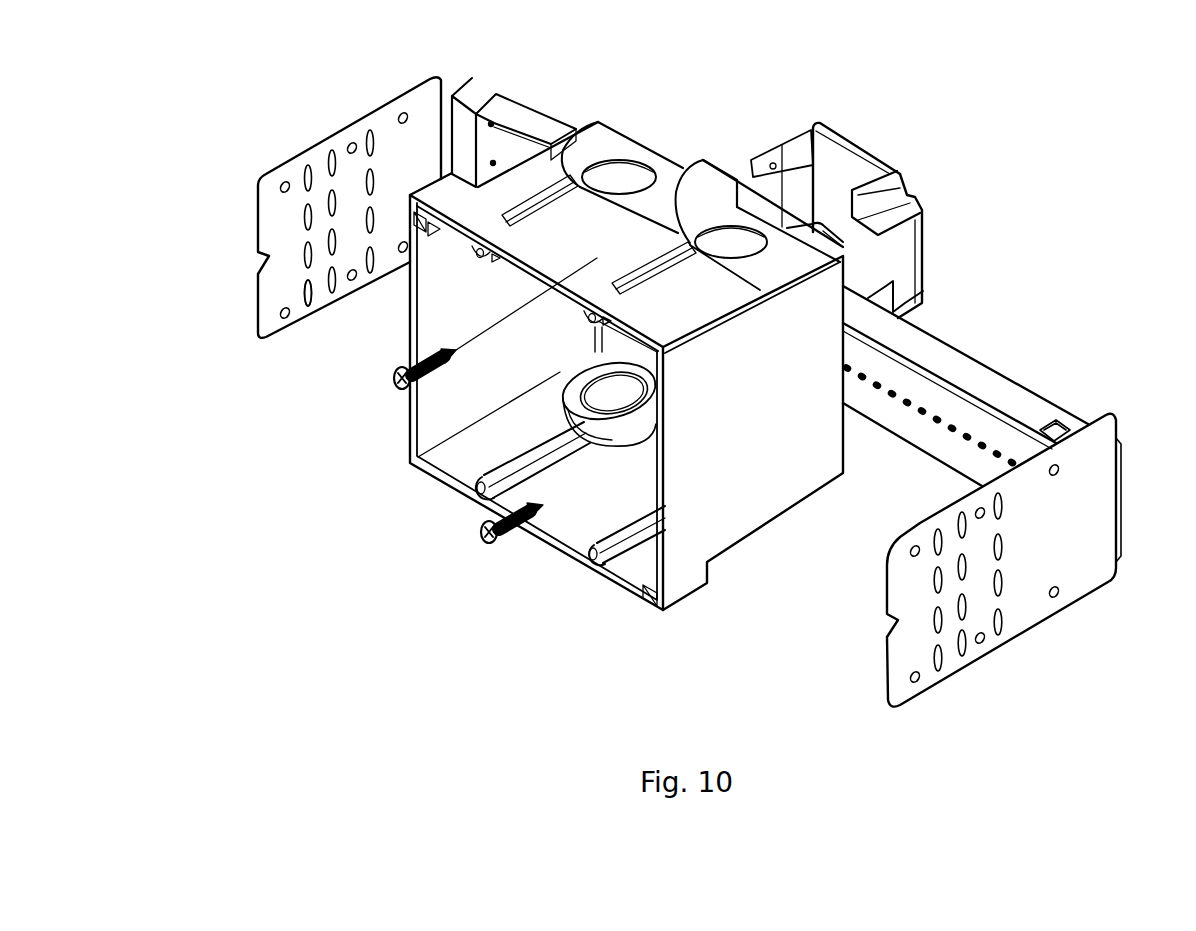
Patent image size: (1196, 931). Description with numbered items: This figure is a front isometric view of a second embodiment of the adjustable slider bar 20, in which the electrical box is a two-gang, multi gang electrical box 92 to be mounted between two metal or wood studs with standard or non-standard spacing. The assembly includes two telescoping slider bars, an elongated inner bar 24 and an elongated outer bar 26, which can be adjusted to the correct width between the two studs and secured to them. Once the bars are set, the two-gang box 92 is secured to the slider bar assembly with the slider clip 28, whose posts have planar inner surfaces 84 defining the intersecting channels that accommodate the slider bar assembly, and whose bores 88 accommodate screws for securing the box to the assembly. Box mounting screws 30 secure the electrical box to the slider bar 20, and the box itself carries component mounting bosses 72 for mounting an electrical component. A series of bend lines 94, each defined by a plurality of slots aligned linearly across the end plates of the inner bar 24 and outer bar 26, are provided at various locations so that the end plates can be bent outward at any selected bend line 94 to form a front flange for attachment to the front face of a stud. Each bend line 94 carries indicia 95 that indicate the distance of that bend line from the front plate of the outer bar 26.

The adjustable slider bar 20 is at (1035, 184).
The elongated inner bar 24 is at (497, 93).
The elongated outer bar 26 is at (963, 368).
The slider clip 28 is at (853, 138).
The box mounting screws 30 is at (505, 533).
The component mounting bosses 72 is at (584, 314).
The planar inner surfaces 84 is at (793, 147).
The bores 88 is at (750, 160).
The multi gang electrical box 92 is at (768, 522).
The bend lines 94 is at (312, 296).
The indicia 95 is at (297, 222).